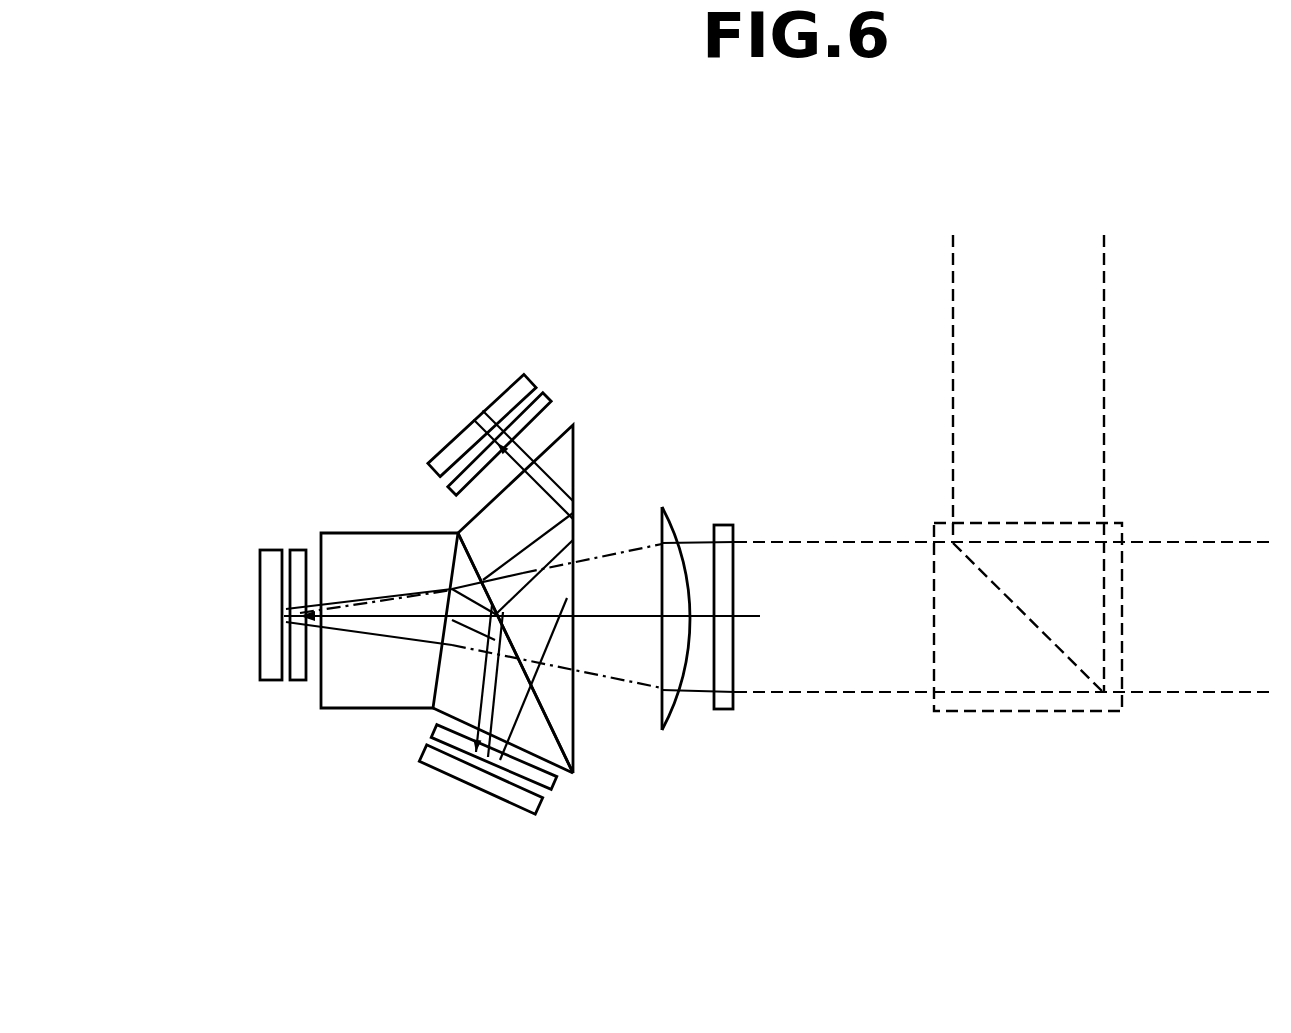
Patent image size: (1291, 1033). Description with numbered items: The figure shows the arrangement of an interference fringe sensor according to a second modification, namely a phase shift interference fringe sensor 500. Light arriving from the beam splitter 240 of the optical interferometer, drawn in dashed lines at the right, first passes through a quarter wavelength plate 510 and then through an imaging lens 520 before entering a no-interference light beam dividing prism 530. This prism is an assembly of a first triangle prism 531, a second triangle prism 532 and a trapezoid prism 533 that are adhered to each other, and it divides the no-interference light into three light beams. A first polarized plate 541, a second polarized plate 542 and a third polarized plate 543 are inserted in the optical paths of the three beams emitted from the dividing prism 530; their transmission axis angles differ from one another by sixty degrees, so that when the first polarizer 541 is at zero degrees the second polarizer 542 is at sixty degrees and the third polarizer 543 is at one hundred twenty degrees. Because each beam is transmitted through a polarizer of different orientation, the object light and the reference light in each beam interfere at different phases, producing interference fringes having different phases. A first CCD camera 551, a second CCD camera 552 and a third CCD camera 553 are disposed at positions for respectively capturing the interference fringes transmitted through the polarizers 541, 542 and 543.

The beam splitter 240 is at (1000, 713).
The phase shift interference fringe sensor 500 is at (558, 300).
The quarter wavelength plate 510 is at (722, 712).
The imaging lens 520 is at (662, 718).
The no-interference light beam dividing prism 530 is at (338, 355).
The first triangle prism 531 is at (573, 458).
The second triangle prism 532 is at (552, 755).
The trapezoid prism 533 is at (378, 533).
The first polarized plate 541 is at (548, 402).
The second polarized plate 542 is at (437, 727).
The third polarized plate 543 is at (298, 548).
The first CCD camera 551 is at (458, 442).
The second CCD camera 552 is at (473, 788).
The third CCD camera 553 is at (263, 595).